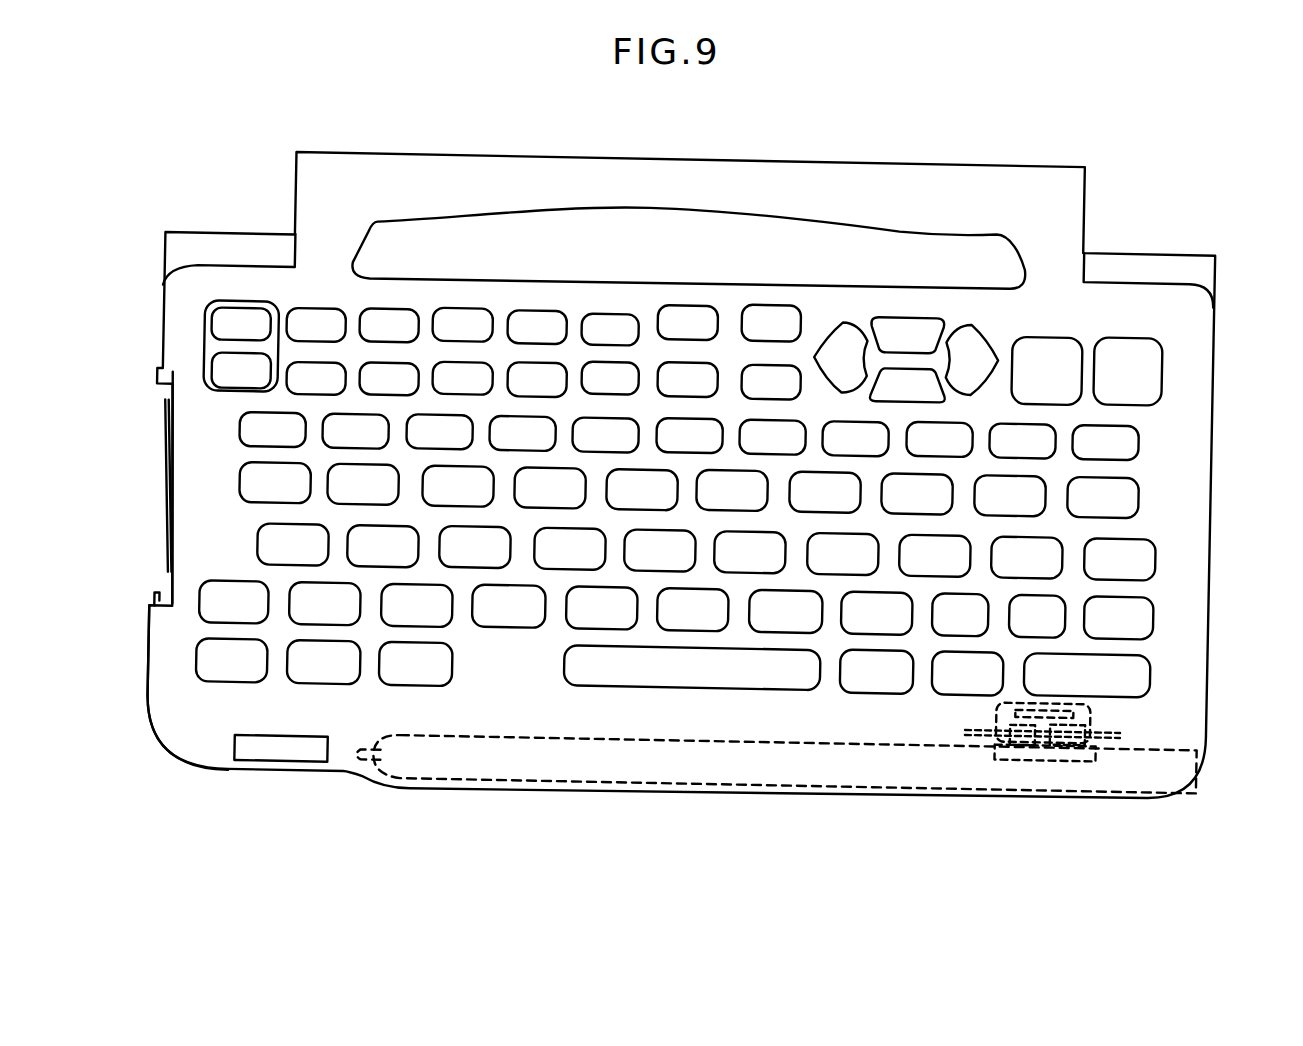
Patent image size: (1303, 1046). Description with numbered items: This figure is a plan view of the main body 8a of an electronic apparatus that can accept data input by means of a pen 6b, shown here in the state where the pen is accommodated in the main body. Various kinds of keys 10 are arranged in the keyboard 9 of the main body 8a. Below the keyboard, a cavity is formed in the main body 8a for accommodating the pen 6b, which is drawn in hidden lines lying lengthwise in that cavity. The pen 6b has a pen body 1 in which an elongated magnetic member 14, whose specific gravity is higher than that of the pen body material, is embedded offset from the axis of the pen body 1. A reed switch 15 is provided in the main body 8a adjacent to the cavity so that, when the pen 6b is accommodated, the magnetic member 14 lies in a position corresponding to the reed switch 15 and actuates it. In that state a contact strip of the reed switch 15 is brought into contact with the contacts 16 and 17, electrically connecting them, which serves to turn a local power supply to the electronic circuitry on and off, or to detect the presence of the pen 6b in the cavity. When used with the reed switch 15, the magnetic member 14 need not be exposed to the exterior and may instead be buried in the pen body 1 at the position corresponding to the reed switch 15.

The pen body 1 is at (797, 763).
The pen 6b is at (899, 782).
The main body 8a is at (147, 696).
The keyboard 9 is at (201, 550).
The keys 10 is at (255, 423).
The magnetic member 14 is at (1061, 736).
The reed switch 15 is at (1101, 705).
The contact 16 is at (1033, 721).
The contact 17 is at (1071, 715).